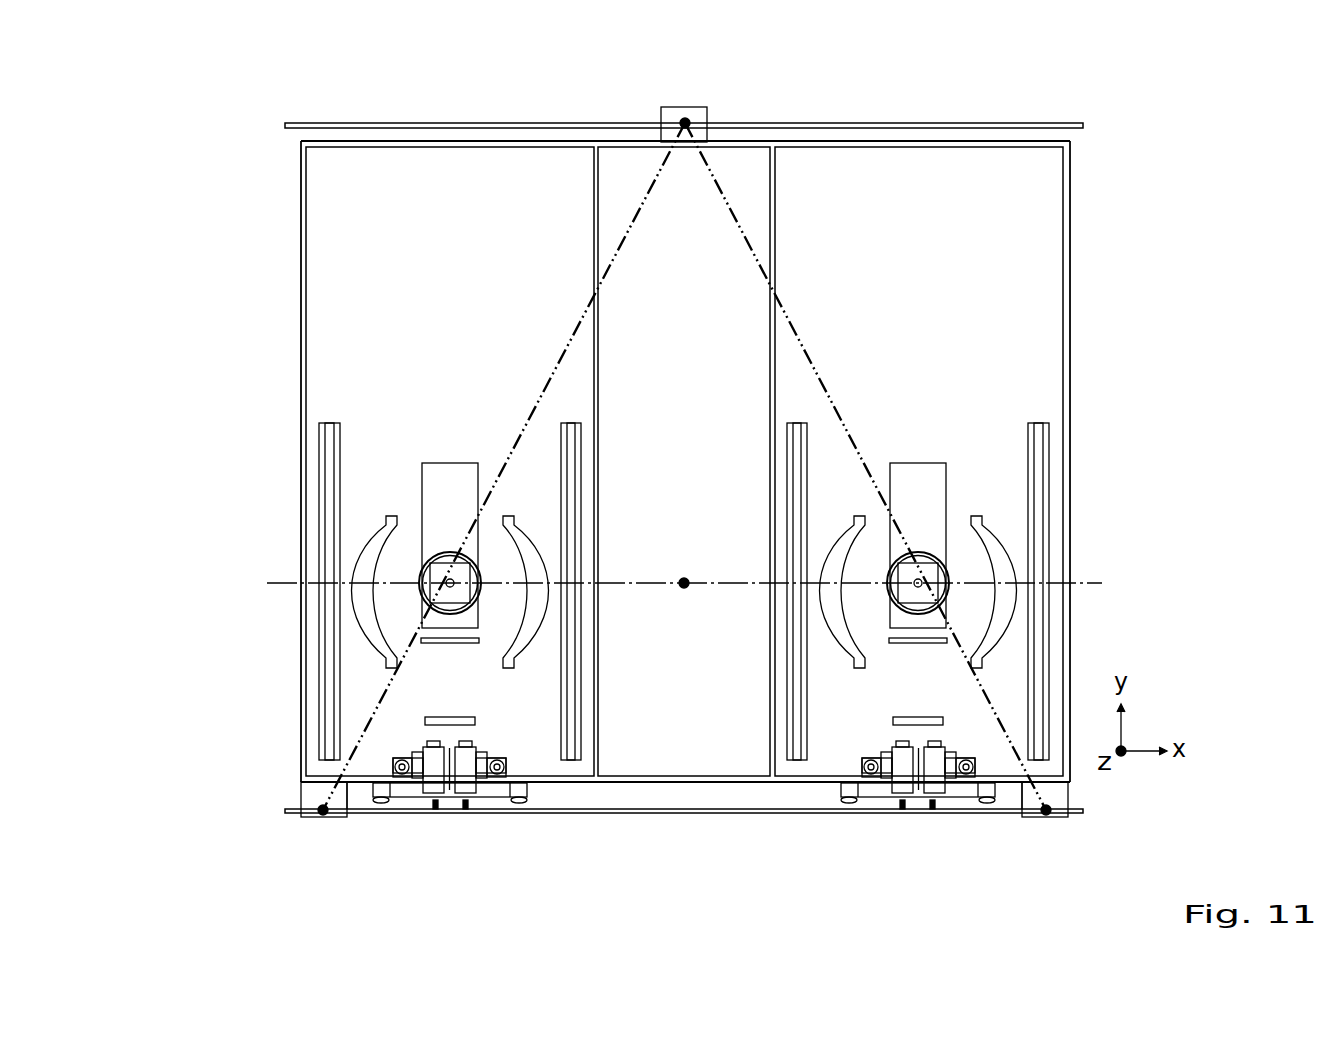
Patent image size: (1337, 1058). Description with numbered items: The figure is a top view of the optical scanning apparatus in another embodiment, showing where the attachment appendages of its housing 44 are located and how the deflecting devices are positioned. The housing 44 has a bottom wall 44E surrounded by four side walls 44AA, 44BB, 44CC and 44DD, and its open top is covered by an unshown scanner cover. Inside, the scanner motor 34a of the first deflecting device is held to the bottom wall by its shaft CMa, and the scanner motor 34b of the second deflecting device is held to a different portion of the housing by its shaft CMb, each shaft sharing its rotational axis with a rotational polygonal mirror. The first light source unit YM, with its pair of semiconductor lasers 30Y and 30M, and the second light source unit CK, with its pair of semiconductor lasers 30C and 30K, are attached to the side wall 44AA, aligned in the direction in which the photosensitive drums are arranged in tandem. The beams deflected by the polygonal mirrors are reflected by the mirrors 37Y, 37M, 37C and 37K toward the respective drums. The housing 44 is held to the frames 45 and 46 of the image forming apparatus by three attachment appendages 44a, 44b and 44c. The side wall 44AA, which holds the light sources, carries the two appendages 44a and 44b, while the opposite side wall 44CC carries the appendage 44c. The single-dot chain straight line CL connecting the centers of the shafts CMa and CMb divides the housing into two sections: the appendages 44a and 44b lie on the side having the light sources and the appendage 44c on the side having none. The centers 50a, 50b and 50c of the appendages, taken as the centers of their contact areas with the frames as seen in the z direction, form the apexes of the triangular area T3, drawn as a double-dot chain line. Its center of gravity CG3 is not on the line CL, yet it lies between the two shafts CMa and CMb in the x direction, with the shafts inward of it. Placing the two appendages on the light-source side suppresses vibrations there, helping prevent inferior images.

The housing 44 is at (1070, 260).
The bottom wall 44E is at (1033, 200).
The side wall 44CC is at (523, 141).
The side wall 44DD is at (1072, 408).
The side wall 44BB is at (302, 487).
The side wall 44AA is at (725, 783).
The attachment appendage 44a is at (313, 818).
The attachment appendage 44b is at (1033, 818).
The frame 45 is at (1076, 817).
The frame 46 is at (862, 123).
The attachment appendage 44c is at (670, 107).
The center of attachment appendage 50c is at (685, 123).
The center of attachment appendage 50a is at (323, 808).
The center of attachment appendage 50b is at (1046, 808).
The triangular area T3 is at (647, 190).
The straight line CL is at (1092, 583).
The center of gravity CG3 is at (684, 588).
The mirror 37Y is at (328, 423).
The mirror 37M is at (572, 423).
The mirror 37C is at (800, 423).
The mirror 37K is at (1040, 423).
The scanner motor 34a is at (445, 463).
The scanner motor 34b is at (920, 463).
The shaft CMa is at (428, 607).
The shaft CMb is at (940, 607).
The first light source unit YM is at (493, 889).
The second light source unit CK is at (973, 889).
The semiconductor laser 30Y is at (435, 809).
The semiconductor laser 30M is at (466, 809).
The semiconductor laser 30C is at (902, 809).
The semiconductor laser 30K is at (933, 809).